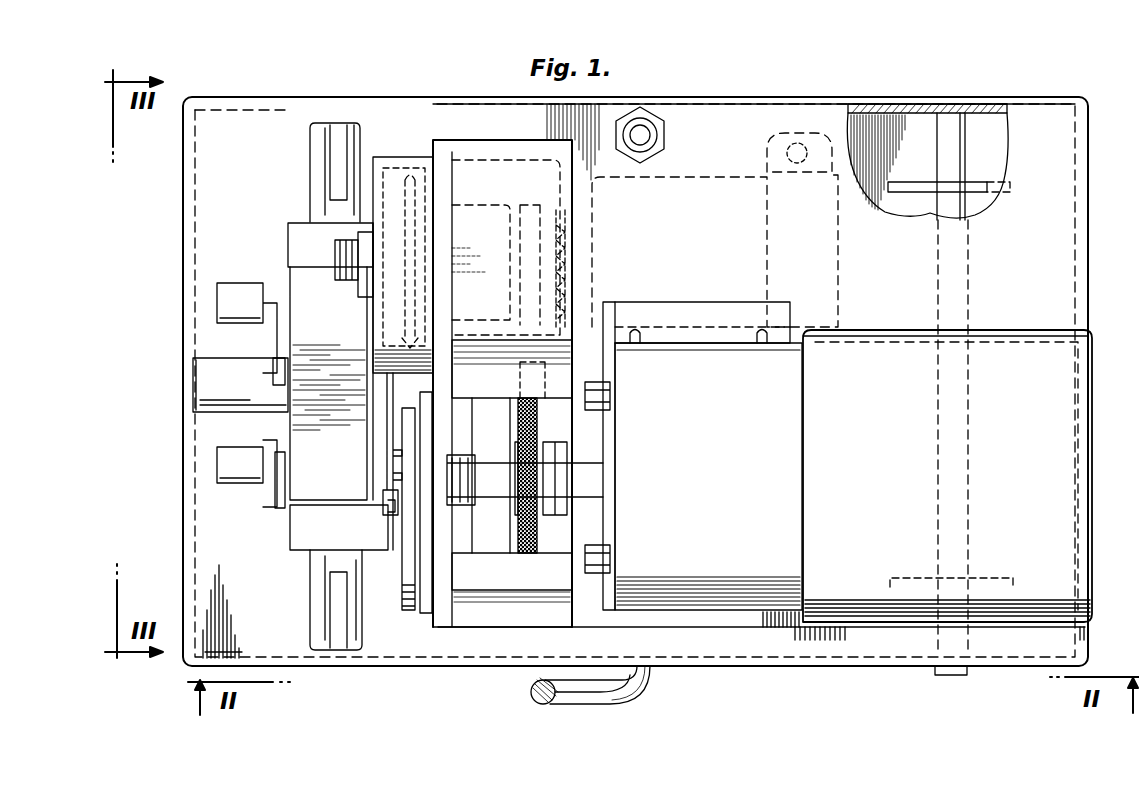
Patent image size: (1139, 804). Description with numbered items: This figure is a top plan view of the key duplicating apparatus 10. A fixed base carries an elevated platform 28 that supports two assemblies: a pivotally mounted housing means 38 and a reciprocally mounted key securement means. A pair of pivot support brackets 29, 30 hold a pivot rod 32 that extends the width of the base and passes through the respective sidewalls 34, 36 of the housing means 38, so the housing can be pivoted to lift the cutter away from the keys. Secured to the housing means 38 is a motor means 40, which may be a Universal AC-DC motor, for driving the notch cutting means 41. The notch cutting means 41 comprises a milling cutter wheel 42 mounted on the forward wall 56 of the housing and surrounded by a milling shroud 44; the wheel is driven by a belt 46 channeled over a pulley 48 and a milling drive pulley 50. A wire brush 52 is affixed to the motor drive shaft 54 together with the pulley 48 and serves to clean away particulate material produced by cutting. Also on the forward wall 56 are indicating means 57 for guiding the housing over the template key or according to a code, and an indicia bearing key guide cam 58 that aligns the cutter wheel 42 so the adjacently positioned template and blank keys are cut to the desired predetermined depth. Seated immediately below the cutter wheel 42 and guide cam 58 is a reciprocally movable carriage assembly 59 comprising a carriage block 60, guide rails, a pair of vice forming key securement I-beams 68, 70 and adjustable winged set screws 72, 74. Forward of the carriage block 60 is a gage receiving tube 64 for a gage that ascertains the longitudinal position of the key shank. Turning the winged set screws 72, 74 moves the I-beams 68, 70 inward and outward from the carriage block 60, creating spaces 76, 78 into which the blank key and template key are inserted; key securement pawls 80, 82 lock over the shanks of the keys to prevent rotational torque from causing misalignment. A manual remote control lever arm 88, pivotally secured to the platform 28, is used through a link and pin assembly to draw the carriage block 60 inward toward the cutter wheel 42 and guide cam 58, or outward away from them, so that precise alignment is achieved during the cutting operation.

The key duplicating apparatus 10 is at (712, 76).
The elevated platform 28 is at (222, 128).
The pivot support bracket 29 is at (1003, 578).
The pivot support bracket 30 is at (918, 195).
The pivot rod 32 is at (955, 147).
The sidewall 34 is at (884, 667).
The sidewall 36 is at (905, 108).
The pivotally mounted housing means 38 is at (700, 633).
The motor means 40 is at (1045, 412).
The notch cutting means 41 is at (418, 140).
The milling cutter wheel 42 is at (420, 205).
The milling shroud 44 is at (385, 160).
The belt 46 is at (615, 423).
The pulley 48 is at (567, 505).
The milling drive pulley 50 is at (565, 232).
The wire brush 52 is at (530, 545).
The motor drive shaft 54 is at (595, 475).
The forward wall 56 is at (443, 390).
The indicating means 57 is at (390, 600).
The indicia bearing key guide cam 58 is at (408, 612).
The reciprocally movable carriage assembly 59 is at (268, 258).
The carriage block 60 is at (331, 361).
The gage receiving tube 64 is at (215, 387).
The key securement I-beam 68 is at (310, 527).
The key securement I-beam 70 is at (318, 240).
The winged set screw 72 is at (322, 133).
The winged set screw 74 is at (323, 610).
The space 76 is at (322, 270).
The space 78 is at (328, 500).
The key securement pawl 80 is at (275, 365).
The key securement pawl 82 is at (275, 500).
The manual remote control lever arm 88 is at (530, 697).